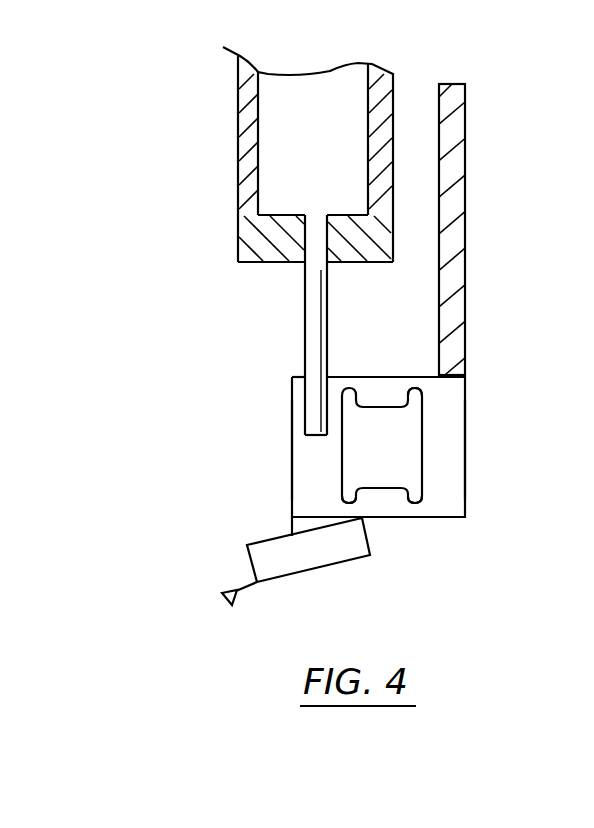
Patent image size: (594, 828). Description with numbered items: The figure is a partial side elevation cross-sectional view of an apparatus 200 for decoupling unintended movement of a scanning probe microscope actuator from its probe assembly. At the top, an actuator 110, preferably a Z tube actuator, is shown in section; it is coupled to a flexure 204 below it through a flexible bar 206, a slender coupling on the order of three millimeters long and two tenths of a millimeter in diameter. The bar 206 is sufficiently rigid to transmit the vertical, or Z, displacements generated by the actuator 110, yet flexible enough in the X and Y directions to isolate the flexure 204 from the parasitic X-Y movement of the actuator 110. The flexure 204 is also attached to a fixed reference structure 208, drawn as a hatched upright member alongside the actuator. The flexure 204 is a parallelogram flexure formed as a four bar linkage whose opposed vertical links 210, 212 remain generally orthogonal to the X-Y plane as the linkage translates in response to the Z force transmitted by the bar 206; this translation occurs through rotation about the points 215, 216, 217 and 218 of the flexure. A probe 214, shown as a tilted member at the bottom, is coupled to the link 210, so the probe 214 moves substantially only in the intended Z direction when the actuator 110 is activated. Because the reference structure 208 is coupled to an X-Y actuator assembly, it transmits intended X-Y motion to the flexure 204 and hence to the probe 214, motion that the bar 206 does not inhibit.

The actuator 110 is at (213, 74).
The apparatus 200 is at (490, 401).
The flexure 204 is at (292, 376).
The flexible bar 206 is at (307, 311).
The fixed reference structure 208 is at (462, 155).
The vertical link 210 is at (302, 450).
The vertical link 212 is at (456, 433).
The probe 214 is at (315, 582).
The rotation point 215 is at (349, 374).
The rotation point 216 is at (408, 378).
The rotation point 217 is at (342, 496).
The rotation point 218 is at (417, 500).